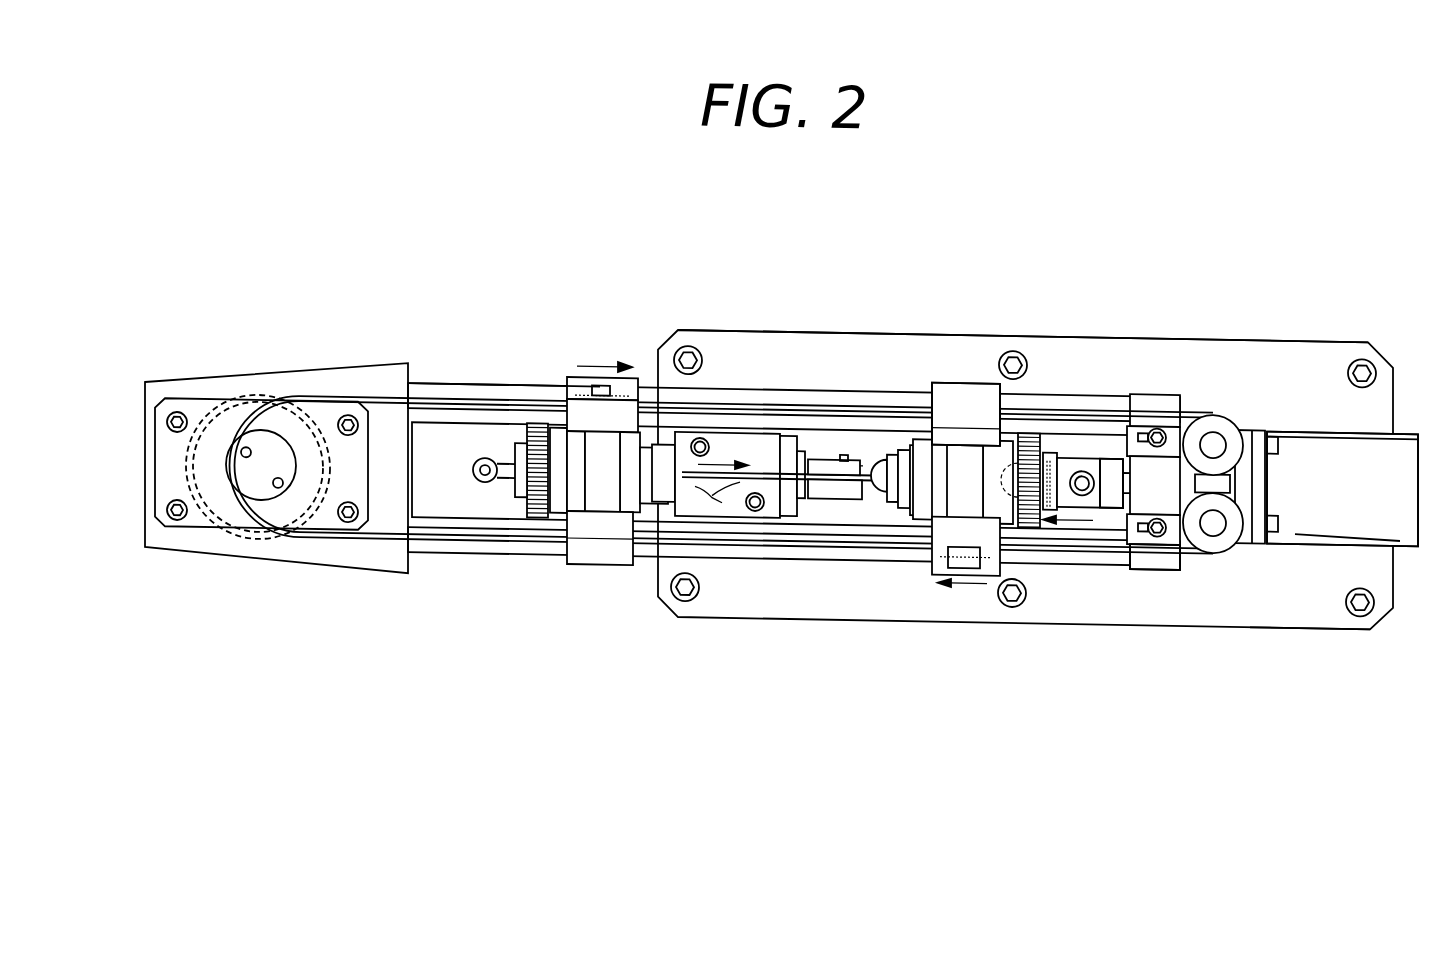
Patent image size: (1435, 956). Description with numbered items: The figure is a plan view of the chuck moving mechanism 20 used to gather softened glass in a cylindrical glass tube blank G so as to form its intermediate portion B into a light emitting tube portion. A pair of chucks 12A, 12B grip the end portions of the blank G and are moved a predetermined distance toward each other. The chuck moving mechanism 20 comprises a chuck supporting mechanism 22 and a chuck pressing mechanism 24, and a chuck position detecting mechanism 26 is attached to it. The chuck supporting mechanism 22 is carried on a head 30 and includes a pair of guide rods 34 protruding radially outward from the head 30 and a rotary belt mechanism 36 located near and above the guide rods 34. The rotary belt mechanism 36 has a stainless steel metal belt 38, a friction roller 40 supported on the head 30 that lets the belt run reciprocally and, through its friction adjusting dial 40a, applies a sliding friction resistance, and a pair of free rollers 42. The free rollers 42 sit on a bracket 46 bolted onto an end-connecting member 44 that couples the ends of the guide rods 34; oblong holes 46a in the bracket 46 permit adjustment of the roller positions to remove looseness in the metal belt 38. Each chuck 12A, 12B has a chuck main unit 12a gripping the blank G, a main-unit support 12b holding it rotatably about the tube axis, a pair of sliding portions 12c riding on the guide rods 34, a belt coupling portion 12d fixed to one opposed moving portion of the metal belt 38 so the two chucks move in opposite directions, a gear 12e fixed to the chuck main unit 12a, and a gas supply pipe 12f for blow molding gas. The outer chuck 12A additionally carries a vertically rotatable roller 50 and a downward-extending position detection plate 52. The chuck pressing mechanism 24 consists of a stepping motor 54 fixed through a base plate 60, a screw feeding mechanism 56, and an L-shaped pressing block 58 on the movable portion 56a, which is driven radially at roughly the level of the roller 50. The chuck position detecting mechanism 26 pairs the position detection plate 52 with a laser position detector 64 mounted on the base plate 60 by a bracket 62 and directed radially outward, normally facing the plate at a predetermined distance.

The chuck moving mechanism 20 is at (1248, 177).
The chuck supporting mechanism 22 is at (455, 251).
The chuck pressing mechanism 24 is at (1139, 337).
The chuck position detecting mechanism 26 is at (870, 438).
The head 30 is at (350, 551).
The guide rods 34 is at (447, 391).
The rotary belt mechanism 36 is at (392, 385).
The metal belt 38 is at (738, 539).
The friction roller 40 is at (262, 400).
The friction adjusting dial 40a is at (250, 490).
The free rollers 42 is at (1218, 410).
The end-connecting member 44 is at (1155, 548).
The bracket 46 is at (1222, 467).
The oblong holes 46a is at (1180, 421).
The roller 50 is at (1033, 419).
The position detection plate 52 is at (917, 511).
The stepping motor 54 is at (1320, 433).
The screw feeding mechanism 56 is at (1068, 530).
The movable portion 56a is at (1115, 492).
The pressing block 58 is at (1075, 450).
The base plate 60 is at (1240, 590).
The bracket 62 is at (790, 433).
The laser position detector 64 is at (843, 479).
The chuck 12A is at (976, 356).
The chuck 12B is at (612, 353).
The chuck main unit 12a is at (654, 482).
The main-unit support 12b is at (592, 481).
The sliding portions 12c is at (577, 382).
The belt coupling portion 12d is at (575, 392).
The gear 12e is at (530, 503).
The gas supply pipe 12f is at (475, 466).
The intermediate portion B is at (812, 457).
The cylindrical glass tube blank G is at (833, 482).